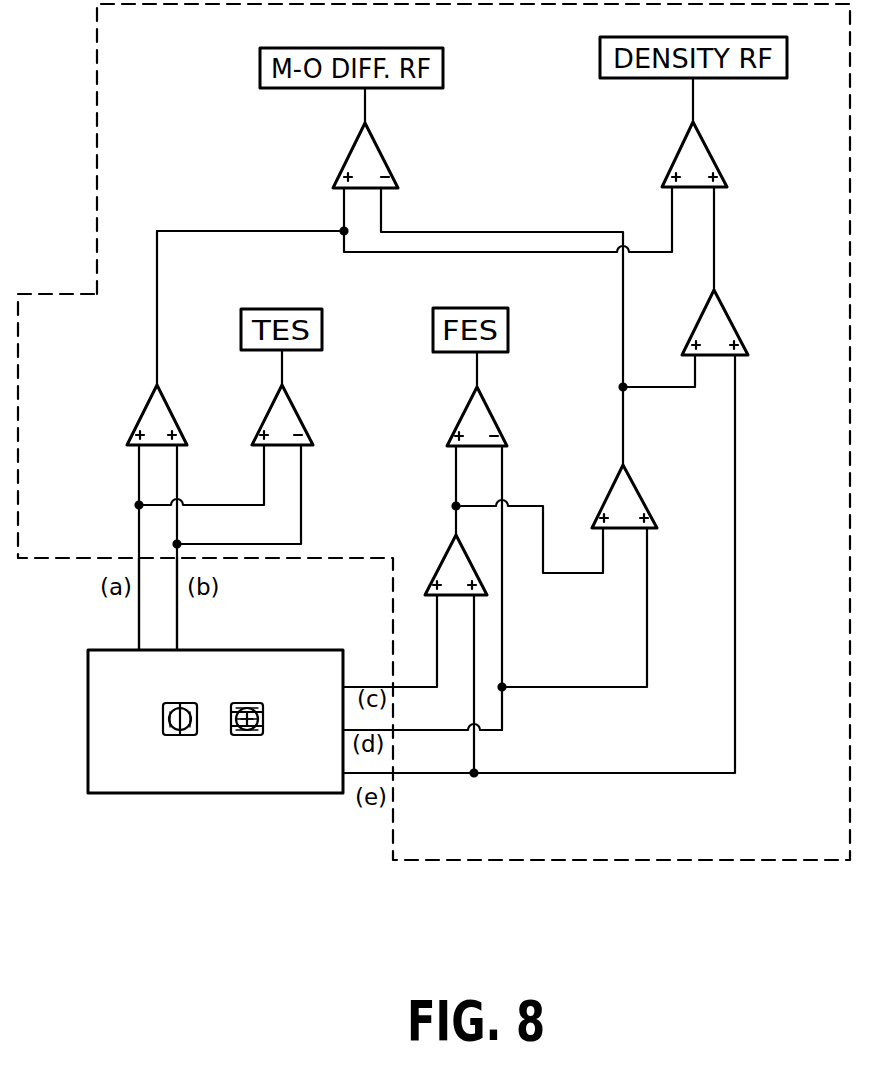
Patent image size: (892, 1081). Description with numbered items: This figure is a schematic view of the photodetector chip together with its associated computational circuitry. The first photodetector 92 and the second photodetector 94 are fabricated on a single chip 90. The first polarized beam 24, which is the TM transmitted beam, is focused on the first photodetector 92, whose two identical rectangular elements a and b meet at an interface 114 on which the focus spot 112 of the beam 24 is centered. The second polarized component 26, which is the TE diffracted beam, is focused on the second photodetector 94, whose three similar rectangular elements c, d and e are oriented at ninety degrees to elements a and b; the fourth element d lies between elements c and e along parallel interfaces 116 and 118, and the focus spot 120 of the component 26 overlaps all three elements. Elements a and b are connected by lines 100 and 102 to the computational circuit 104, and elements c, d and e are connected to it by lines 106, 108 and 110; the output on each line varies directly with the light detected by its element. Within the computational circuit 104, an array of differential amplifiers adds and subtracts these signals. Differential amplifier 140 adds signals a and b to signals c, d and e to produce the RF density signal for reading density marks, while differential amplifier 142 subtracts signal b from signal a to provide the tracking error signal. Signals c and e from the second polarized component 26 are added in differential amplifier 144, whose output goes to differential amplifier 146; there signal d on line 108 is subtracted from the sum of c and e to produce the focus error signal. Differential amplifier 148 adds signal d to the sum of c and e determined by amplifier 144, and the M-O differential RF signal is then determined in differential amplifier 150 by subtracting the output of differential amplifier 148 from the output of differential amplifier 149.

The computational circuit 104 is at (97, 88).
The differential amplifier 150 is at (393, 150).
The differential amplifier 140 is at (672, 155).
The differential amplifier 148 is at (612, 496).
The differential amplifier 149 is at (142, 405).
The differential amplifier 142 is at (298, 407).
The differential amplifier 146 is at (492, 411).
The differential amplifier 144 is at (439, 564).
The single chip 90 is at (290, 640).
The first photodetector 92 is at (163, 730).
The second photodetector 94 is at (236, 735).
The first polarized beam 24 is at (173, 706).
The second polarized component 26 is at (246, 735).
The focus spot 112 is at (163, 718).
The interface 114 is at (188, 706).
The interface 116 is at (262, 712).
The interface 118 is at (262, 736).
The focus spot 120 is at (240, 706).
The line 100 is at (139, 625).
The line 102 is at (178, 616).
The line 106 is at (437, 671).
The line 108 is at (502, 708).
The line 110 is at (447, 776).